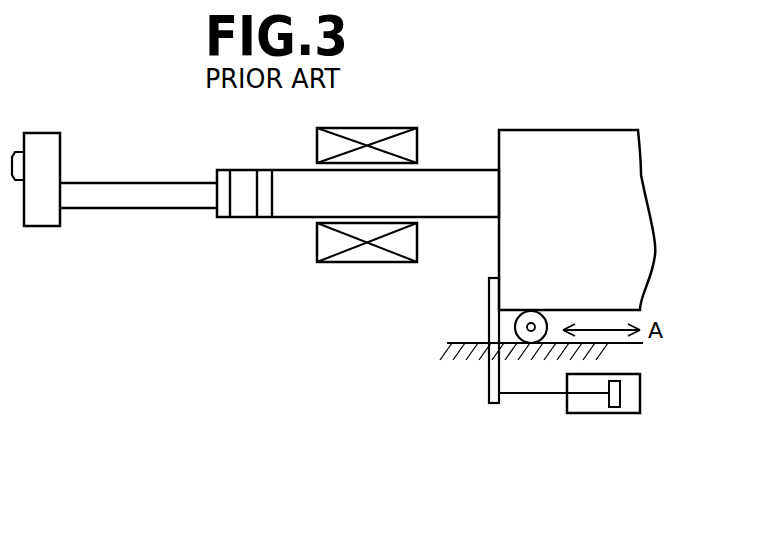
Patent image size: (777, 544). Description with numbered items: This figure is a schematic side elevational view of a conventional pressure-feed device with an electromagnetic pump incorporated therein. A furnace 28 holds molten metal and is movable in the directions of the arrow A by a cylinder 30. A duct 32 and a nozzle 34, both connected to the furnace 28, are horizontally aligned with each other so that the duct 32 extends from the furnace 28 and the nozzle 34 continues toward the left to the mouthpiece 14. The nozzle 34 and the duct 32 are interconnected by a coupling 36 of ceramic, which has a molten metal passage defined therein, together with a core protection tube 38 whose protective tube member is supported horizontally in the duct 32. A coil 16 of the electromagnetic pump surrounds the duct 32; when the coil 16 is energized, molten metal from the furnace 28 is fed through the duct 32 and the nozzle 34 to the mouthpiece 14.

The mouthpiece 14 is at (43, 212).
The nozzle 34 is at (148, 197).
The duct 32 is at (310, 178).
The coupling 36 is at (243, 180).
The core protection tube 38 is at (262, 207).
The coil 16 is at (362, 250).
The furnace 28 is at (550, 145).
The cylinder 30 is at (632, 395).